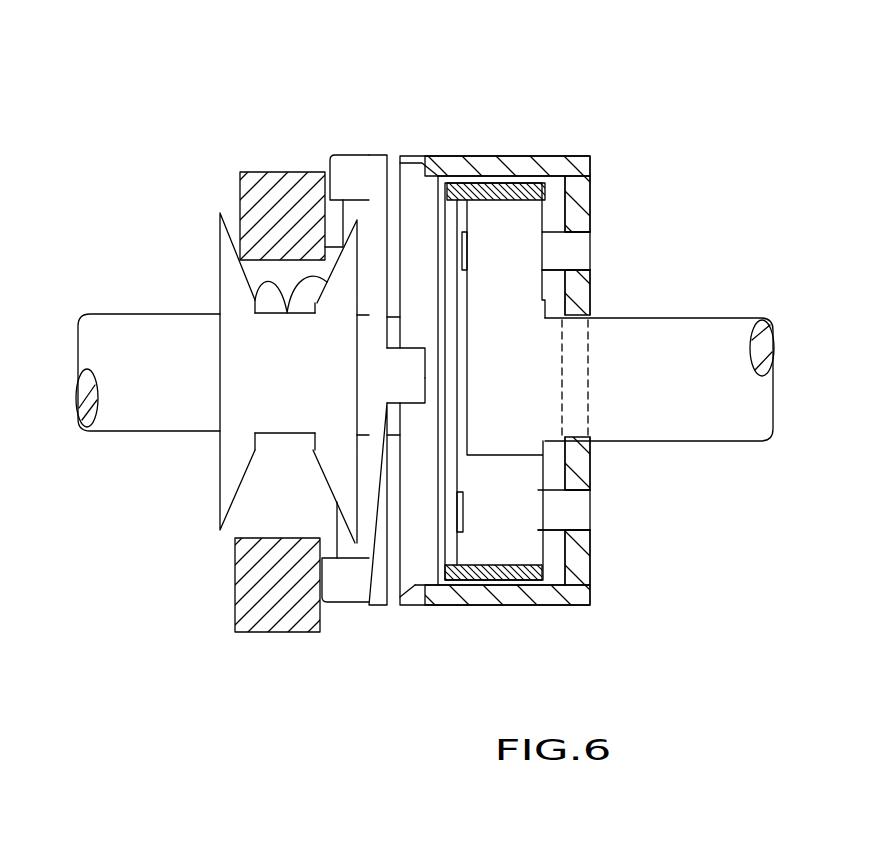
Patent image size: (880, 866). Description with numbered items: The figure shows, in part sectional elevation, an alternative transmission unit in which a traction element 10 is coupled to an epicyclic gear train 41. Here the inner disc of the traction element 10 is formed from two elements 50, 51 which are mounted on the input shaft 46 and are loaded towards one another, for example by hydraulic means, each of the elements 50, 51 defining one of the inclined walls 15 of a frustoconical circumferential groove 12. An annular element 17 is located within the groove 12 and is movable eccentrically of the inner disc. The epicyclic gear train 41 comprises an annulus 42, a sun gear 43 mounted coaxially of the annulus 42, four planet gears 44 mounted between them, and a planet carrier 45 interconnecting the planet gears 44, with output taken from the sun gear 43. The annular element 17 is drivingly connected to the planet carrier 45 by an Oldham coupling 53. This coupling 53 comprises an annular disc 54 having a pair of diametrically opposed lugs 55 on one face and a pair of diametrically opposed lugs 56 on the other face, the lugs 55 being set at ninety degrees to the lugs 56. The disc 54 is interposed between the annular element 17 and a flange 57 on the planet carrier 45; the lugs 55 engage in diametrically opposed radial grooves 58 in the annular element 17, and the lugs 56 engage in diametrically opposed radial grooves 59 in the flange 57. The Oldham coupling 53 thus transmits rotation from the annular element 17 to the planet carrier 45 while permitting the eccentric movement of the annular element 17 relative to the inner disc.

The traction element 10 is at (137, 595).
The circumferential groove 12 is at (257, 508).
The wall 15 is at (286, 313).
The annular element 17 is at (245, 613).
The epicyclic gear train 41 is at (668, 181).
The annulus 42 is at (513, 580).
The sun gear 43 is at (512, 442).
The planet gears 44 is at (523, 282).
The planet carrier 45 is at (585, 168).
The input shaft 46 is at (80, 433).
The element 50 is at (233, 285).
The element 51 is at (338, 480).
The Oldham coupling 53 is at (376, 118).
The annular disc 54 is at (380, 600).
The lugs 55 is at (337, 155).
The lugs 56 is at (410, 360).
The flange 57 is at (413, 568).
The radial grooves 58 is at (333, 220).
The radial grooves 59 is at (428, 380).